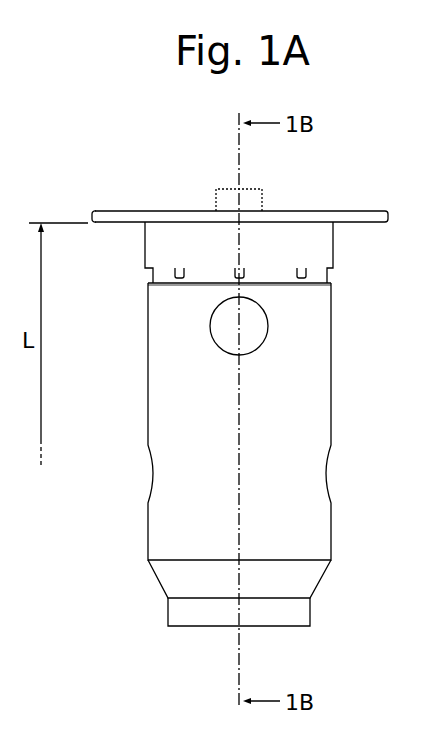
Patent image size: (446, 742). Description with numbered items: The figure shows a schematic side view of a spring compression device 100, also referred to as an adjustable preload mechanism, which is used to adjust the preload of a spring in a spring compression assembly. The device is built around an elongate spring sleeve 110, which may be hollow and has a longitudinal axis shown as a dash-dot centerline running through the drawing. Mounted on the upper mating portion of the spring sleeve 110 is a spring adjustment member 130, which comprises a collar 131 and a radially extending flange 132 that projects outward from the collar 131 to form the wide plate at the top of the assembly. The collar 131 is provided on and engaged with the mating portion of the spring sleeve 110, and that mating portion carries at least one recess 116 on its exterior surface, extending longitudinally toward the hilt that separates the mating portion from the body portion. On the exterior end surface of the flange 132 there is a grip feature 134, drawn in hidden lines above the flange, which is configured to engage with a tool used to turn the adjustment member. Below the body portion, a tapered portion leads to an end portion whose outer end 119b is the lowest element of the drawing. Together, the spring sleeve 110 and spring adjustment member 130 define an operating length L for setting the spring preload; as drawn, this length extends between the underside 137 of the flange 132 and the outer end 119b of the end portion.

The spring compression device 100 is at (362, 511).
The spring sleeve 110 is at (331, 389).
The recess 116 is at (178, 284).
The outer end 119b is at (300, 627).
The spring adjustment member 130 is at (345, 255).
The collar 131 is at (143, 256).
The radially extending flange 132 is at (368, 211).
The grip feature 134 is at (258, 189).
The underside of the flange 137 is at (104, 224).